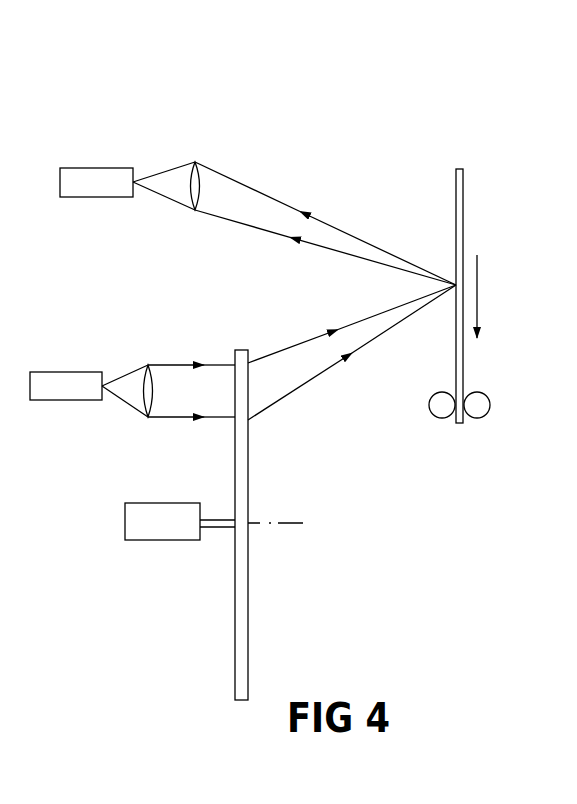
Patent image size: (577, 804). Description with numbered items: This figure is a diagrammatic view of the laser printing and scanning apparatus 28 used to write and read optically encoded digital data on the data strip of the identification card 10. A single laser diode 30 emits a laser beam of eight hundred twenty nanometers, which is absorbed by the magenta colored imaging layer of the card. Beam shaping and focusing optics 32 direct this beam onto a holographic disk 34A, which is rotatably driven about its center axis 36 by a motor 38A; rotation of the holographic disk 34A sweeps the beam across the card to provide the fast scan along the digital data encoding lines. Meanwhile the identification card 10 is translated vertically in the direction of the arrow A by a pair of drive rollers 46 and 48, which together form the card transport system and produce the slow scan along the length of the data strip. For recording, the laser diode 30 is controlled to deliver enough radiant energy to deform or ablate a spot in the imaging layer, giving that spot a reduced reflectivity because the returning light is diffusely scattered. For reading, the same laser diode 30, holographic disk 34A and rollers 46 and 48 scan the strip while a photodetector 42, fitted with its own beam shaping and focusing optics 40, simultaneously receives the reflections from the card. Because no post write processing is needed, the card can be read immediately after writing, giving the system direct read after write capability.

The optical detection apparatus 28 is at (240, 90).
The identification card 10 is at (464, 187).
The arrow A is at (477, 296).
The drive roller 46 is at (485, 416).
The drive roller 48 is at (435, 415).
The photodetector 42 is at (75, 168).
The beam shaping and focusing optics 40 is at (205, 185).
The laser diode 30 is at (93, 372).
The beam shaping and focusing optics 32 is at (158, 382).
The holographic disk 34A is at (248, 598).
The center axis 36 is at (261, 519).
The motor 38A is at (157, 540).